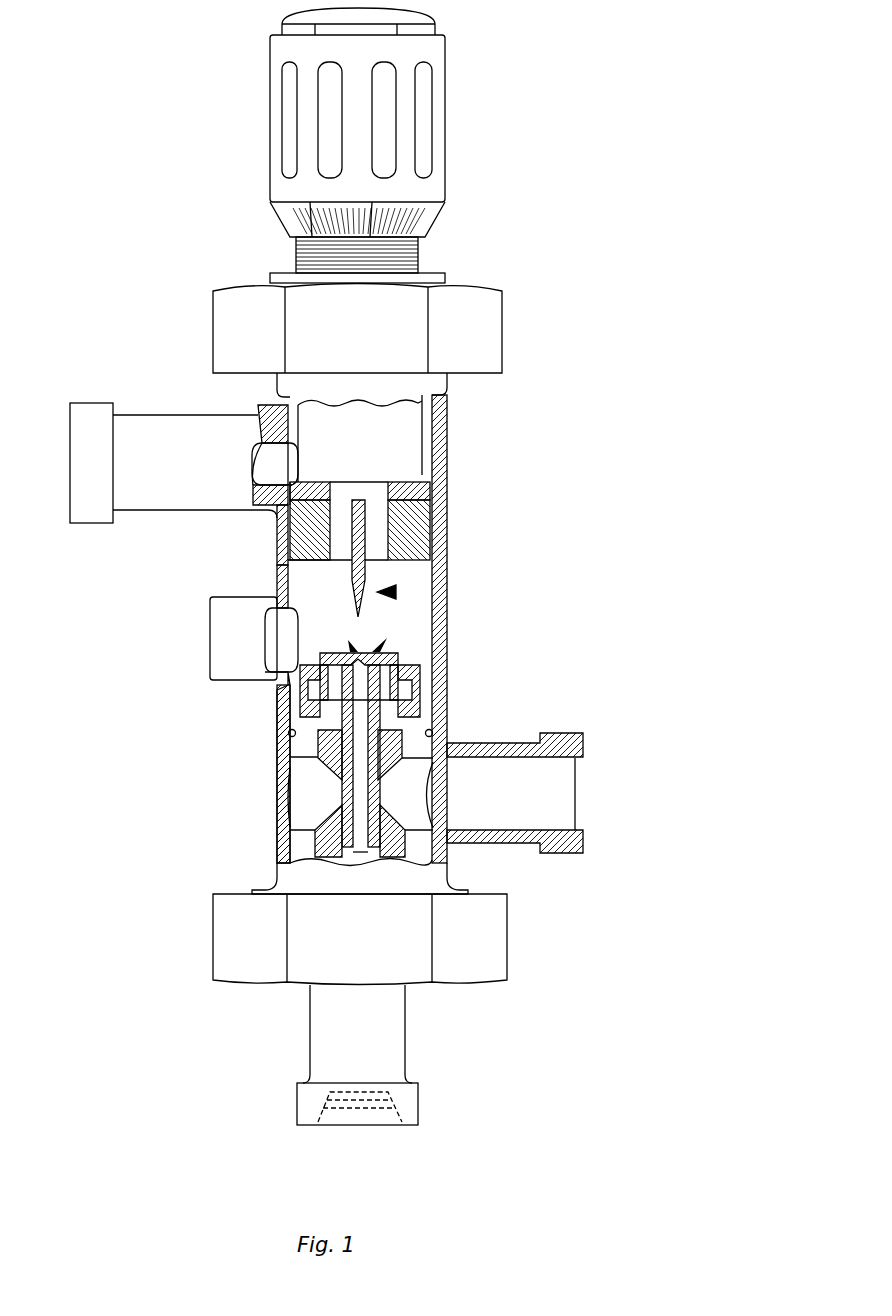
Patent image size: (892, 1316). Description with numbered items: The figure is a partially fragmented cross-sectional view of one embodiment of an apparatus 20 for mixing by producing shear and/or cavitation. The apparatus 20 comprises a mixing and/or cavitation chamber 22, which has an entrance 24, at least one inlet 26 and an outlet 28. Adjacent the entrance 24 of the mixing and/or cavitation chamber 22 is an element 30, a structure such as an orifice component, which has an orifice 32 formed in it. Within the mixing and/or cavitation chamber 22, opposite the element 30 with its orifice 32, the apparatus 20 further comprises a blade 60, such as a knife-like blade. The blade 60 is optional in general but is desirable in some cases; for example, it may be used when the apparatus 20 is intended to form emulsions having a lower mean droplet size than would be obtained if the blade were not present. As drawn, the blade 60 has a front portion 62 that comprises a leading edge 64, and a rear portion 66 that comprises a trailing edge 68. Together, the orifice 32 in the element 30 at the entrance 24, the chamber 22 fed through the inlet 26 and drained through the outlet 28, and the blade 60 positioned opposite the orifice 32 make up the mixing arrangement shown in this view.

The apparatus 20 is at (557, 178).
The mixing and/or cavitation chamber 22 is at (407, 622).
The entrance 24 is at (388, 638).
The inlet 26 is at (360, 717).
The outlet 28 is at (392, 506).
The element 30 is at (320, 645).
The orifice 32 is at (350, 641).
The blade 60 is at (358, 617).
The front portion 62 is at (396, 592).
The leading edge 64 is at (278, 580).
The rear portion 66 is at (278, 523).
The trailing edge 68 is at (363, 500).